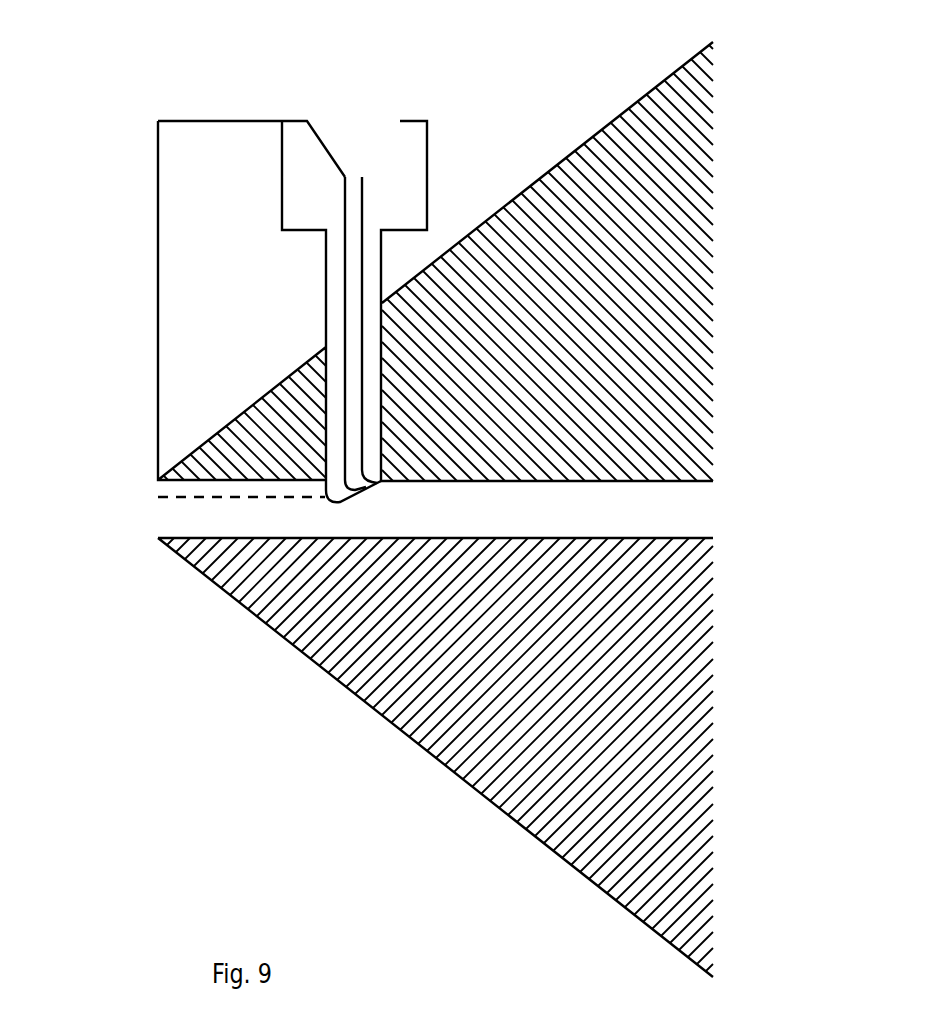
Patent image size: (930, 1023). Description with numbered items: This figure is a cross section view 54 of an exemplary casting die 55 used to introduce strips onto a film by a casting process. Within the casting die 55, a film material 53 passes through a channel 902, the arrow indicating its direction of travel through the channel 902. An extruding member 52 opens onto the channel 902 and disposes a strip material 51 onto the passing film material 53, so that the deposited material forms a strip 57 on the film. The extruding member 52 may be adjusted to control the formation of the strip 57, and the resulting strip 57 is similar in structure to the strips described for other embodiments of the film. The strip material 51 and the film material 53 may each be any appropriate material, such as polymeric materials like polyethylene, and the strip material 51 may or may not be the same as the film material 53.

The strip material 51 is at (353, 199).
The extruding member 52 is at (330, 503).
The film material 53 is at (400, 512).
The cross section view 54 is at (435, 757).
The casting die 55 is at (655, 84).
The strip 57 is at (150, 482).
The channel 902 is at (695, 529).